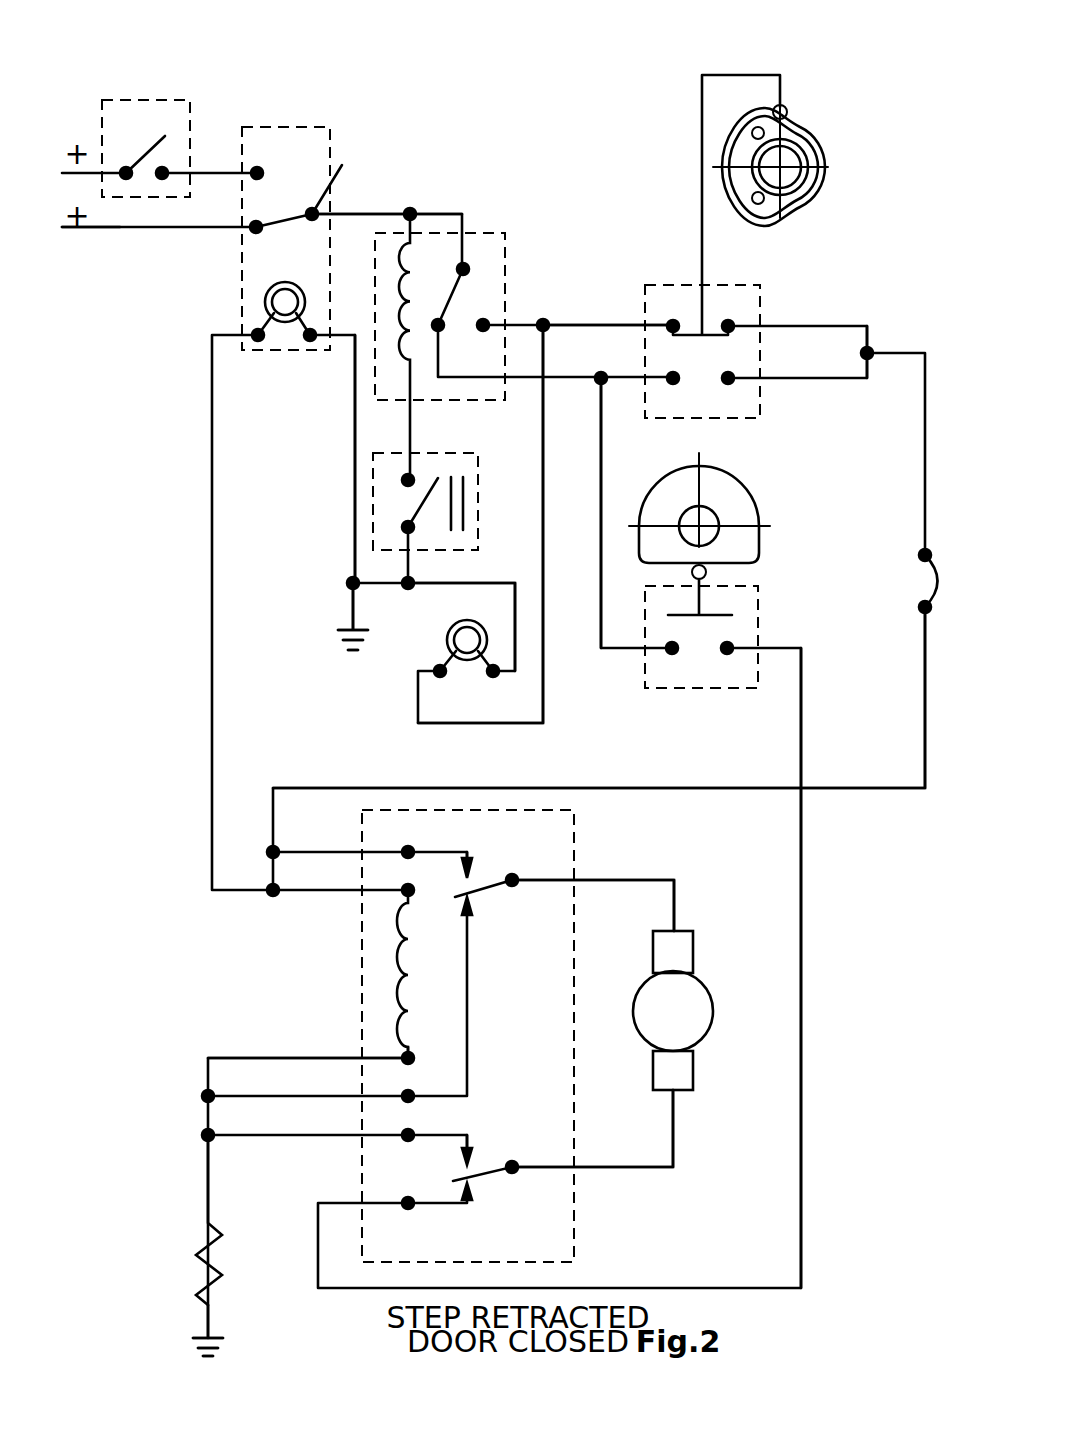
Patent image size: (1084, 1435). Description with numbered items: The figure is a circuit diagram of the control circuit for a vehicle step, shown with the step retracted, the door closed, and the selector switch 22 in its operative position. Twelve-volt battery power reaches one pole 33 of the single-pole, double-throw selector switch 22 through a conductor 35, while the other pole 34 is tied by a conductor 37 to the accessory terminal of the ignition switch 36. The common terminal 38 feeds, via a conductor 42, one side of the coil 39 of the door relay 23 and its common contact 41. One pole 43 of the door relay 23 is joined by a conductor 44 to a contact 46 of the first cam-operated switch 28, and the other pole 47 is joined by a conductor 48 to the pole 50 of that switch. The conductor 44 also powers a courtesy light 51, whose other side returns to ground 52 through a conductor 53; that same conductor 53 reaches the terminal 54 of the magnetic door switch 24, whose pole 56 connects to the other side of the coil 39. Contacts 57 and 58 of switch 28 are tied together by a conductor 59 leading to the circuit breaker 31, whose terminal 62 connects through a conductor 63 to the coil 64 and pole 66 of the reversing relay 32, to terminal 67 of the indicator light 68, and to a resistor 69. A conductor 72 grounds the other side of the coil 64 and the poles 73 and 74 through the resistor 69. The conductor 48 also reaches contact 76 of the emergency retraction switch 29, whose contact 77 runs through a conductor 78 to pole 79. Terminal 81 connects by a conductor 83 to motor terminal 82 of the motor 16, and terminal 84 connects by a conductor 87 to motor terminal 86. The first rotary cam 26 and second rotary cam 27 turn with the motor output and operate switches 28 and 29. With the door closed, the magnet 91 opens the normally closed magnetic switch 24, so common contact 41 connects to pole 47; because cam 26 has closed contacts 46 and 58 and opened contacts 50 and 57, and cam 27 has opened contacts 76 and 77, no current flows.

The motor 16 is at (690, 1017).
The selector switch 22 is at (303, 127).
The door relay 23 is at (490, 233).
The magnetic door switch 24 is at (480, 520).
The first rotary cam 26 is at (803, 207).
The second rotary cam 27 is at (760, 540).
The first cam-operated switch 28 is at (677, 282).
The second cam-operated switch 29 is at (758, 622).
The circuit breaker 31 is at (938, 580).
The reversing relay 32 is at (574, 850).
The pole 33 is at (252, 237).
The pole 34 is at (257, 170).
The conductor 35 is at (122, 227).
The ignition switch 36 is at (145, 98).
The conductor 37 is at (210, 173).
The common terminal 38 is at (342, 165).
The coil 39 is at (400, 298).
The common contact 41 is at (468, 265).
The conductor 42 is at (360, 213).
The pole 43 is at (486, 322).
The conductor 44 is at (578, 326).
The contact 46 is at (670, 322).
The pole 47 is at (438, 332).
The conductor 48 is at (560, 378).
The pole 50 is at (673, 385).
The courtesy light 51 is at (448, 642).
The ground 52 is at (343, 640).
The conductor 53 is at (355, 365).
The terminal 54 is at (405, 527).
The pole 56 is at (405, 478).
The contact 57 is at (728, 383).
The contact 58 is at (730, 323).
The conductor 59 is at (832, 380).
The terminal 62 is at (923, 607).
The conductor 63 is at (816, 790).
The coil 64 is at (400, 972).
The pole 66 is at (923, 555).
The terminal 67 is at (258, 343).
The indicator light 68 is at (265, 297).
The resistor 69 is at (198, 1272).
The conductor 72 is at (325, 1057).
The pole 73 is at (412, 1095).
The pole 74 is at (405, 1140).
The contact 76 is at (672, 655).
The contact 77 is at (727, 655).
The conductor 78 is at (802, 973).
The pole 79 is at (408, 1210).
The terminal 81 is at (512, 885).
The motor terminal 82 is at (682, 951).
The conductor 83 is at (674, 881).
The terminal 84 is at (512, 1165).
The motor terminal 86 is at (682, 1069).
The conductor 87 is at (595, 1169).
The magnet 91 is at (465, 497).